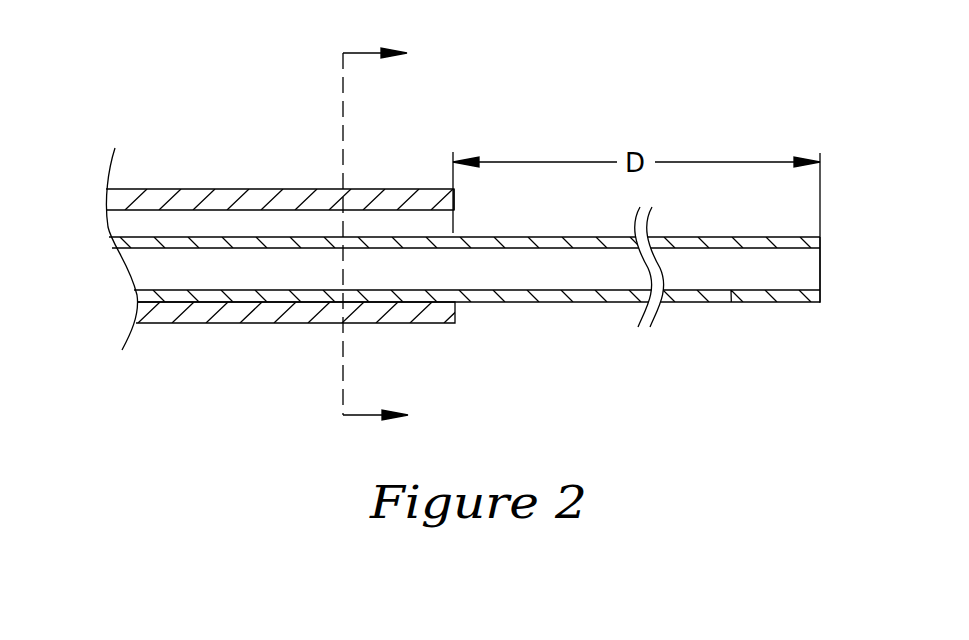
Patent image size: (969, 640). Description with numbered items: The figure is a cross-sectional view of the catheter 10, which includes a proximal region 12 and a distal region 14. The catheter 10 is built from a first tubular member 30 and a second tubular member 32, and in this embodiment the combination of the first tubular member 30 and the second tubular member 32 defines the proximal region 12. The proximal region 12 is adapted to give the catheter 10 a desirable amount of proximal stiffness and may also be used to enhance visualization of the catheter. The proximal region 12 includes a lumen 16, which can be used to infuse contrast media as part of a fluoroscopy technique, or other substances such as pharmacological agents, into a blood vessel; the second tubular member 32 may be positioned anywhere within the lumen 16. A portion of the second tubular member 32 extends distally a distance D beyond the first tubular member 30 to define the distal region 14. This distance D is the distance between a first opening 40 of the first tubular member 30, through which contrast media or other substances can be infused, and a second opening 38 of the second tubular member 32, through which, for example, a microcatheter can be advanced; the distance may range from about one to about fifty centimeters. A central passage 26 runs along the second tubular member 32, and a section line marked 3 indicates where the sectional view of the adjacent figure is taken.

The section line 3- 3 is at (388, 237).
The catheter 10 is at (465, 324).
The proximal region 12 is at (168, 160).
The distal region 14 is at (701, 325).
The lumen 16 is at (140, 223).
The lumen 26 is at (152, 268).
The first tubular member 30 is at (260, 315).
The second tubular member 32 is at (752, 300).
The second opening 38 is at (805, 268).
The first opening 40 is at (442, 218).